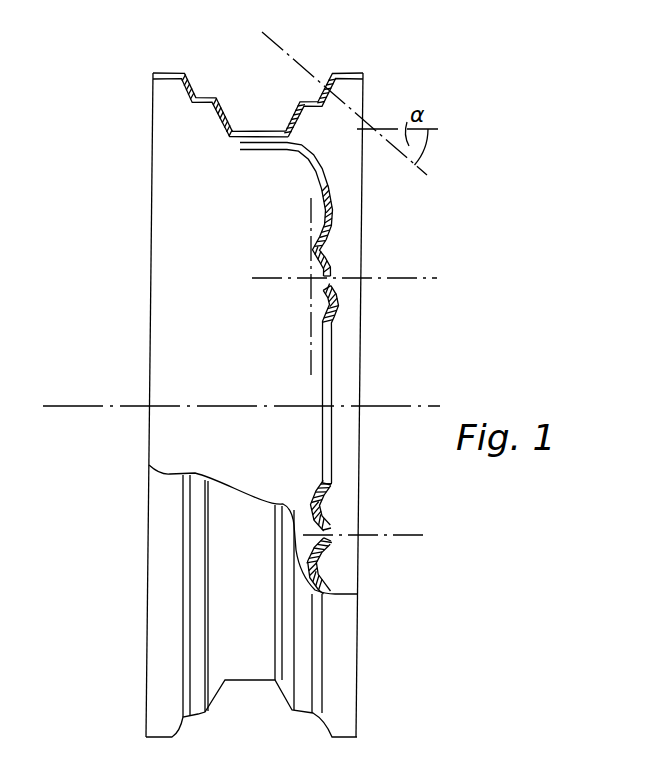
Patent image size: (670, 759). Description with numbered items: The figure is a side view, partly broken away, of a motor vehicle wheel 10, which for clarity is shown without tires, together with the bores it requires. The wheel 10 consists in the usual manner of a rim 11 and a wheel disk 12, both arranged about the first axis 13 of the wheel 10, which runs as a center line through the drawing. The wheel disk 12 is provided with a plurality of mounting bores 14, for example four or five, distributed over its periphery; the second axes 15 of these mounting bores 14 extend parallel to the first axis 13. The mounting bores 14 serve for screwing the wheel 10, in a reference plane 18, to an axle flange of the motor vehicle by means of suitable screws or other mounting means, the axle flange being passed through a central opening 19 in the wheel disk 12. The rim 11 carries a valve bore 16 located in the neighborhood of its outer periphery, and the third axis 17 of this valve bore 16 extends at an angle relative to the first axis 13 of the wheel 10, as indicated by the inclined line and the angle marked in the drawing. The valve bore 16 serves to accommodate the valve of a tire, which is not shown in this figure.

The wheel 10 is at (100, 163).
The rim 11 is at (185, 73).
The wheel disk 12 is at (334, 207).
The first axis 13 is at (68, 405).
The mounting bores 14 is at (334, 290).
The second axes 15 is at (432, 278).
The valve bore 16 is at (326, 83).
The third axis 17 is at (287, 53).
The reference plane 18 is at (308, 252).
The central opening 19 is at (327, 482).